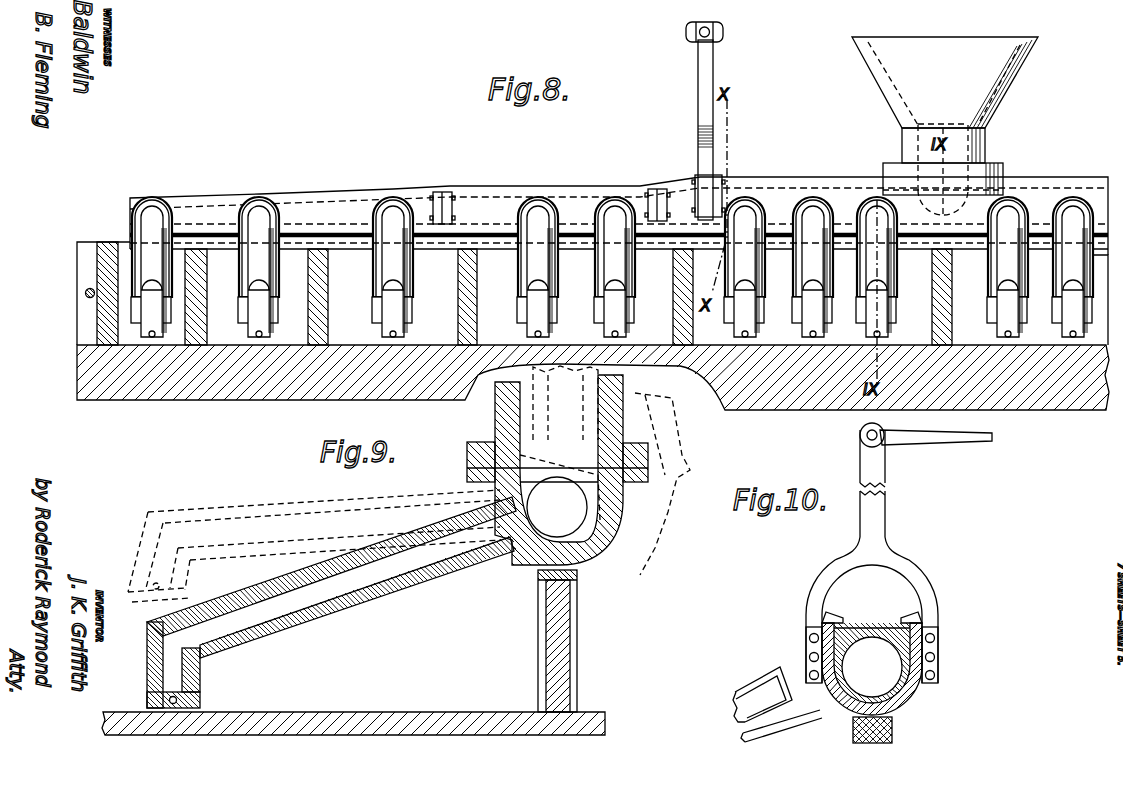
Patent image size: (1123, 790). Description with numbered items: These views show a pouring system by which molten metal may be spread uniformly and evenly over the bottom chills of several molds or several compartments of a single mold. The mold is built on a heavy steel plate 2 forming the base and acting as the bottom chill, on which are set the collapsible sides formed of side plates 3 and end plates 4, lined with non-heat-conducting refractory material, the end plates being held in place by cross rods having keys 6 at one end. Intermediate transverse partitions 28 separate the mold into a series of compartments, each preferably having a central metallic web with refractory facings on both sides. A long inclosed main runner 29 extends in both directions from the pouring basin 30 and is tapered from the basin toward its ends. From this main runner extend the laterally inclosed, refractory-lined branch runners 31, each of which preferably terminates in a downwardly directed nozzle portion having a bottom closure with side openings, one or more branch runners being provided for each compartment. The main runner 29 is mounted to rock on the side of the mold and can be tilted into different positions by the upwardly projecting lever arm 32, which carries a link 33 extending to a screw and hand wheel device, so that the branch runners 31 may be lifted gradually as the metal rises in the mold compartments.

In FIG. 8, the heavy steel plate 2 is at (82, 368).
In FIG. 9, the heavy steel plate 2 is at (360, 722).
In FIG. 8, the side plates 3 is at (86, 257).
In FIG. 9, the side plates 3 is at (577, 627).
In FIG. 10, the side plates 3 is at (892, 722).
In FIG. 8, the end plates 4 is at (97, 284).
In FIG. 8, the keys 6 is at (86, 297).
In FIG. 8, the intermediate transverse partitions 28 is at (207, 313).
In FIG. 8, the main runner 29 is at (323, 196).
In FIG. 9, the main runner 29 is at (580, 524).
In FIG. 10, the main runner 29 is at (872, 663).
In FIG. 8, the pouring basin 30 is at (945, 126).
In FIG. 9, the pouring basin 30 is at (593, 415).
In FIG. 8, the branch runners 31 is at (147, 249).
In FIG. 9, the branch runners 31 is at (257, 523).
In FIG. 10, the branch runners 31 is at (752, 697).
In FIG. 8, the lever arm 32 is at (710, 84).
In FIG. 10, the lever arm 32 is at (878, 507).
In FIG. 8, the link 33 is at (716, 24).
In FIG. 10, the link 33 is at (968, 441).